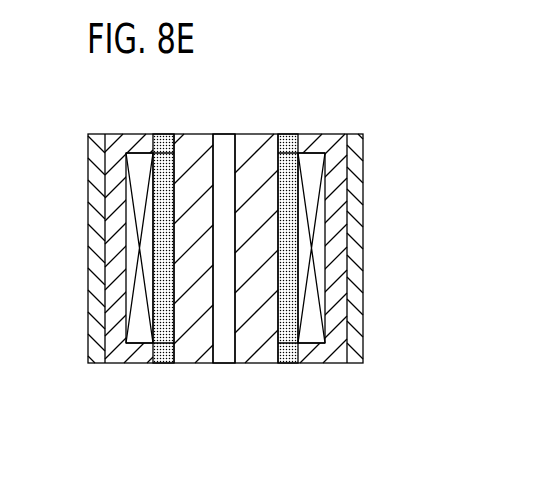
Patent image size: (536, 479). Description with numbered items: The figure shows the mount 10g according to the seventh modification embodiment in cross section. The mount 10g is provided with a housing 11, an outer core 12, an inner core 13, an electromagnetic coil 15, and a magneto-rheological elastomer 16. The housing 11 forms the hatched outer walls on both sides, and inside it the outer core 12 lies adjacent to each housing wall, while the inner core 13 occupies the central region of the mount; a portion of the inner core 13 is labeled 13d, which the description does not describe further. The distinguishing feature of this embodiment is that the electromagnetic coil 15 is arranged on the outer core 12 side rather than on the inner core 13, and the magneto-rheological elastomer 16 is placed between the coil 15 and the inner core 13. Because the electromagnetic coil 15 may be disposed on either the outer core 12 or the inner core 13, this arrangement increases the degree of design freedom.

The mount 10g is at (345, 90).
The housing 11 is at (355, 190).
The outer core 12 is at (337, 313).
The inner core 13 is at (248, 133).
The gap 13d is at (223, 133).
The electromagnetic coil 15 is at (313, 242).
The magneto-rheological elastomer 16 is at (157, 220).